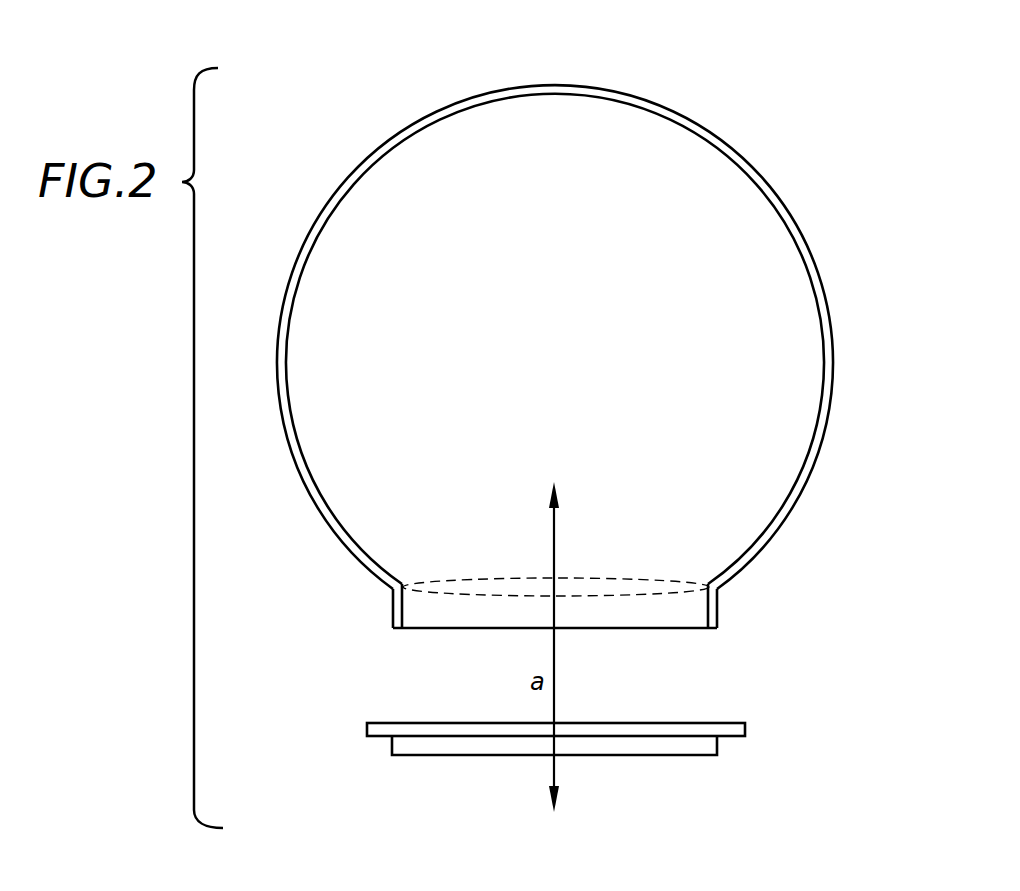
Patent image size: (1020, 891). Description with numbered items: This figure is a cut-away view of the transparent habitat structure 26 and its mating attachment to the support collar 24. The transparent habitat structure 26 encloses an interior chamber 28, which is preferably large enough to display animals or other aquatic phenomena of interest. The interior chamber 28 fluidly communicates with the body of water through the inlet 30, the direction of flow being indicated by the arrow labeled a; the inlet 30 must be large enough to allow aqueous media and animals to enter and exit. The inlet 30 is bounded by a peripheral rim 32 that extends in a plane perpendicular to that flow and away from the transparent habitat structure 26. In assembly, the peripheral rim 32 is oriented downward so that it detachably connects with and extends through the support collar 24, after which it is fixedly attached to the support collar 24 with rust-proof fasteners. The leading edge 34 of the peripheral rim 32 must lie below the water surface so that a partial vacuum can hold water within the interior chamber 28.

The support collar 24 is at (745, 728).
The transparent habitat structure 26 is at (682, 112).
The interior chamber 28 is at (767, 388).
The inlet 30 is at (623, 575).
The peripheral rim 32 is at (717, 612).
The leading edge 34 is at (396, 628).